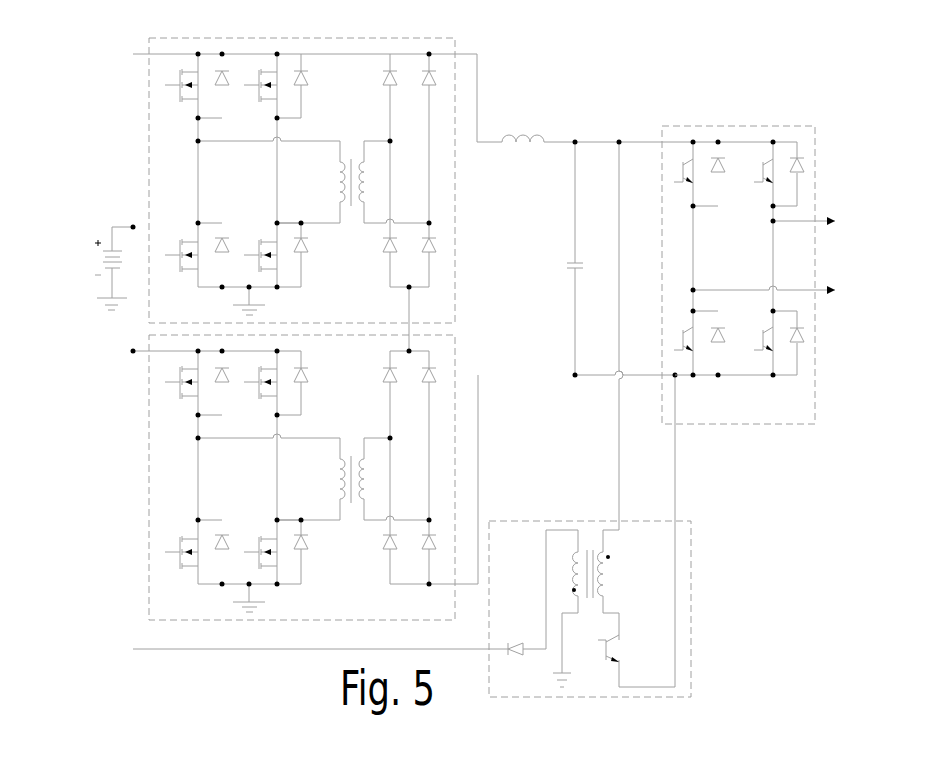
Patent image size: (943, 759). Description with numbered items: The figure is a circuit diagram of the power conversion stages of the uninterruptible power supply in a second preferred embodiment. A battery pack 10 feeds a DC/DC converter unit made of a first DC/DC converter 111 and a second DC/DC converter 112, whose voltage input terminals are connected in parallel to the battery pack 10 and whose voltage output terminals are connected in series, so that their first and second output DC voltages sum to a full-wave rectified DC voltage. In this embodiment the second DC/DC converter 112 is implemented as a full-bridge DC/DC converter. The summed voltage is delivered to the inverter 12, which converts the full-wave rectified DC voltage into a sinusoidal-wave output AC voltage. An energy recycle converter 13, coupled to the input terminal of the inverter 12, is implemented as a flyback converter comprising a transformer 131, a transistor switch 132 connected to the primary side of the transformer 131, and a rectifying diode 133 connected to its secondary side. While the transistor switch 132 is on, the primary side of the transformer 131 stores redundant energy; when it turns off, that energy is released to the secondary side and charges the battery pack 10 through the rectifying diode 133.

The battery pack 10 is at (95, 262).
The first DC/DC converter 111 is at (456, 233).
The second DC/DC converter 112 is at (456, 362).
The inverter 12 is at (755, 424).
The energy recycle converter 13 is at (440, 579).
The transformer 131 is at (596, 522).
The transistor switch 132 is at (631, 651).
The rectifying diode 133 is at (519, 626).